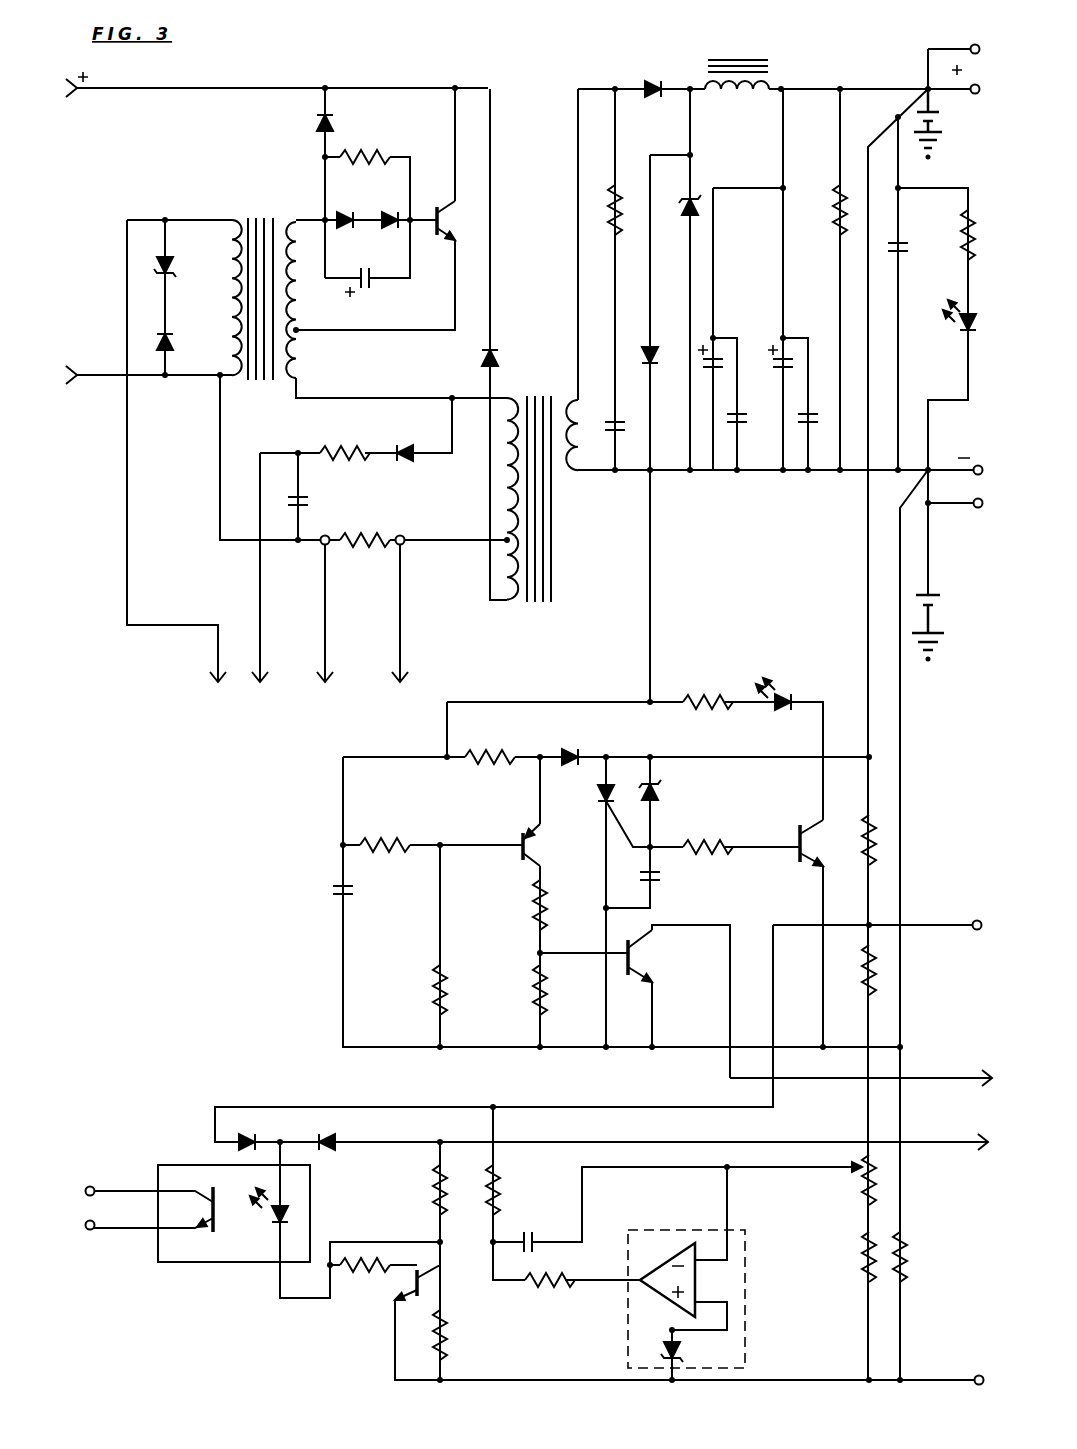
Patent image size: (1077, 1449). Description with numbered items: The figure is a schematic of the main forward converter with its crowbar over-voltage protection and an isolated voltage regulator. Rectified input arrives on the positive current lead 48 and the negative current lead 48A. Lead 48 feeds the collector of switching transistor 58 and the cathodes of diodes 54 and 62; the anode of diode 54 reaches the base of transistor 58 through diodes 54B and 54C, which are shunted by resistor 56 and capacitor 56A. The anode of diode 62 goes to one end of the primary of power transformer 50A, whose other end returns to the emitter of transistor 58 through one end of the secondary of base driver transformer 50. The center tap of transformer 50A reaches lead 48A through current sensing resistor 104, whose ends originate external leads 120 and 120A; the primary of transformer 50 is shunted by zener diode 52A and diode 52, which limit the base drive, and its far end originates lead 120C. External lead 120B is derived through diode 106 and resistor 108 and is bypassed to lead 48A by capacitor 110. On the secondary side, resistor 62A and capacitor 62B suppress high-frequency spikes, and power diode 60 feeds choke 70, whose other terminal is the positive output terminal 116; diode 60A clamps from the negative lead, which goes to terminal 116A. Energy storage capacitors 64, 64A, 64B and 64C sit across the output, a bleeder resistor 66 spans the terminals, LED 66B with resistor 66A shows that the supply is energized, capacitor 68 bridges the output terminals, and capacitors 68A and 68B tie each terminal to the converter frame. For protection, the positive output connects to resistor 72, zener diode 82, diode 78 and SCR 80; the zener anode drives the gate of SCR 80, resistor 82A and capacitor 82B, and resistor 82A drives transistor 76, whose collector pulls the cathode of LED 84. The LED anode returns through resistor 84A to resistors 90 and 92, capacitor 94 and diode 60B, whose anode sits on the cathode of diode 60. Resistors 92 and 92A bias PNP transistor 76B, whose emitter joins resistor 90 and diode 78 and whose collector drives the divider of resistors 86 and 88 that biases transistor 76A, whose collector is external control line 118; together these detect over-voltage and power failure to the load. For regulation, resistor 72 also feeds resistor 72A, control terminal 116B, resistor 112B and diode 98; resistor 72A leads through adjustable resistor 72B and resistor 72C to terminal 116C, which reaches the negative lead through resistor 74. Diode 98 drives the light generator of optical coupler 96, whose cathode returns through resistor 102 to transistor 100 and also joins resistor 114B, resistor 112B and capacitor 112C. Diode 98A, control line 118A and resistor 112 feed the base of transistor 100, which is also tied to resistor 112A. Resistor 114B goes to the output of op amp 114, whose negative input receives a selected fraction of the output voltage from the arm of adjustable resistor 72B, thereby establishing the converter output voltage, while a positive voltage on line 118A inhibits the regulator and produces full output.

The positive converter input current lead 48 is at (79, 95).
The negative current lead 48A is at (79, 382).
The base driver transformer 50 is at (258, 210).
The power transformer 50A is at (548, 612).
The diode 52 is at (172, 342).
The zener diode 52A is at (170, 275).
The diode 54 is at (316, 125).
The diode 54B is at (348, 214).
The diode 54C is at (392, 228).
The resistor 56 is at (362, 150).
The capacitor 56A is at (378, 284).
The transistor 58 is at (445, 203).
The power supply diode 60 is at (655, 80).
The power diode 60A is at (692, 200).
The diode 60B is at (655, 362).
The diode 62 is at (463, 362).
The resistor 62A is at (615, 184).
The capacitor 62B is at (614, 420).
The energy storage capacitor 64 is at (718, 345).
The energy storage capacitor 64A is at (788, 345).
The energy storage capacitor 64B is at (740, 418).
The energy storage capacitor 64C is at (805, 412).
The resistor 66 is at (842, 184).
The resistor 66A is at (963, 250).
The LED 66B is at (968, 333).
The capacitor 68 is at (903, 246).
The capacitor 68A is at (938, 120).
The capacitor 68B is at (931, 592).
The choke 70 is at (752, 58).
The resistor 72 is at (868, 858).
The resistor 72A is at (868, 980).
The adjustable resistor 72B is at (865, 1197).
The resistor 72C is at (865, 1262).
The resistor 74 is at (905, 1258).
The NPN transistor 76 is at (812, 830).
The NPN transistor 76A is at (652, 955).
The PNP transistor 76B is at (520, 838).
The diode 78 is at (600, 745).
The SCR 80 is at (598, 794).
The zener diode 82 is at (655, 793).
The resistor 82A is at (702, 845).
The capacitor 82B is at (658, 878).
The LED 84 is at (815, 677).
The resistor 84A is at (728, 700).
The resistor 86 is at (538, 902).
The resistor 88 is at (538, 985).
The resistor 90 is at (515, 755).
The resistor 92 is at (382, 840).
The resistor 92A is at (437, 982).
The capacitor 94 is at (352, 892).
The optical coupler 96 is at (205, 1266).
The diode 98 is at (243, 1135).
The diode 98A is at (337, 1142).
The NPN transistor 100 is at (395, 1292).
The resistor 102 is at (380, 1262).
The current sensing resistor 104 is at (365, 534).
The diode 106 is at (422, 432).
The resistor 108 is at (352, 446).
The capacitor 110 is at (306, 505).
The resistor 112 is at (432, 1188).
The resistor 112A is at (445, 1335).
The resistor 112B is at (492, 1190).
The capacitor 112C is at (530, 1232).
The operational amplifier 114 is at (688, 1248).
The resistor 114B is at (560, 1282).
The positive output terminals 116 is at (979, 84).
The negative output terminals 116A is at (982, 475).
The power supply control terminal 116B is at (977, 920).
The external connection point 116C is at (982, 1375).
The external control line 118 is at (985, 1072).
The external control line 118A is at (990, 1140).
The external lead 120 is at (328, 684).
The external lead 120A is at (403, 684).
The external lead 120B is at (262, 684).
The external lead 120C is at (212, 684).